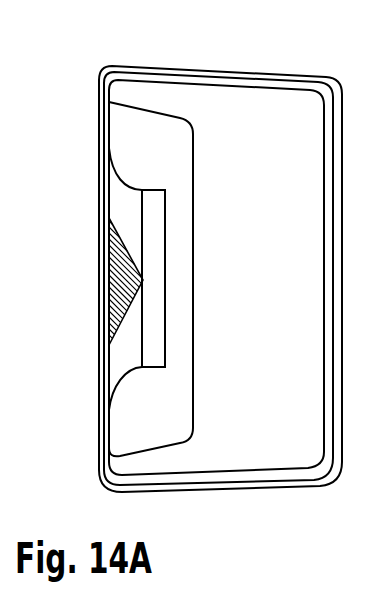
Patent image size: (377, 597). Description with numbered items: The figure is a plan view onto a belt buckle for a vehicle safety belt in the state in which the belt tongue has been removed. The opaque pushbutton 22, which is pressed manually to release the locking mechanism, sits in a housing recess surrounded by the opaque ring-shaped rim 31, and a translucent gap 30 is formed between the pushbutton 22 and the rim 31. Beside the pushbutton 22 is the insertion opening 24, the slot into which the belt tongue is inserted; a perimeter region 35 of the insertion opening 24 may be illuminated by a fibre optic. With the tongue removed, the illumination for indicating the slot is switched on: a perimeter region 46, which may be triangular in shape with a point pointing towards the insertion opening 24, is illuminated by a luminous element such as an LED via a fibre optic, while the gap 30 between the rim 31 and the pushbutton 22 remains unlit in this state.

The pushbutton 22 is at (268, 279).
The insertion opening 24 is at (152, 213).
The translucent gap 30 is at (180, 77).
The rim 31 is at (242, 72).
The perimeter region of insertion opening 35 is at (127, 357).
The perimeter region 46 is at (117, 270).